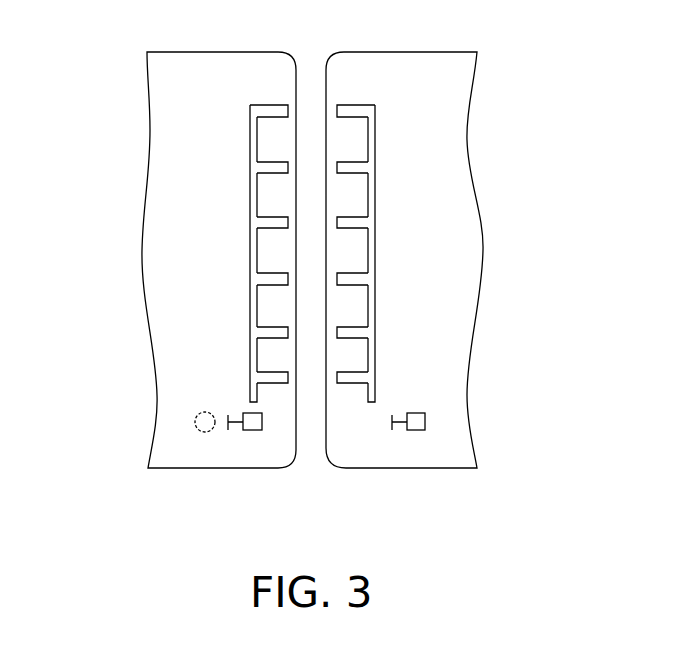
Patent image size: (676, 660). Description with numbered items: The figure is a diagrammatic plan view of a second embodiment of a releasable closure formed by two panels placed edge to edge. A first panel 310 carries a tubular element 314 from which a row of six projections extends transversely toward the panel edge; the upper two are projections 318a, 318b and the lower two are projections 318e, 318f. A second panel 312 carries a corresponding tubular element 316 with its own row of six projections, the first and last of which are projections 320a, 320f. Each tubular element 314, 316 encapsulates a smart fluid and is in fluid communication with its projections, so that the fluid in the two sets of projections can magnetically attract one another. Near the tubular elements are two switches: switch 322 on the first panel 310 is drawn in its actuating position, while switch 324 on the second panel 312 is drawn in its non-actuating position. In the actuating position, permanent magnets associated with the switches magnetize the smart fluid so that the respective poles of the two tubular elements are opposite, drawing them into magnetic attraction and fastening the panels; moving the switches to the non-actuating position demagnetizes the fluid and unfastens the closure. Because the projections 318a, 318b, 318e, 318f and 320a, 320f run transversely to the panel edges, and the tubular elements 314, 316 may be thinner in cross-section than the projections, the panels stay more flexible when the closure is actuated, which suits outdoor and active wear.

The first panel 310 is at (142, 250).
The second panel 312 is at (483, 255).
The tubular element 314 is at (224, 208).
The tubular element 316 is at (399, 243).
The projection 318a is at (260, 105).
The projection 318b is at (272, 162).
The projection 318e is at (273, 327).
The projection 318f is at (273, 372).
The projection 320a is at (352, 105).
The projection 320f is at (368, 372).
The switch 322 is at (252, 430).
The switch 324 is at (425, 422).